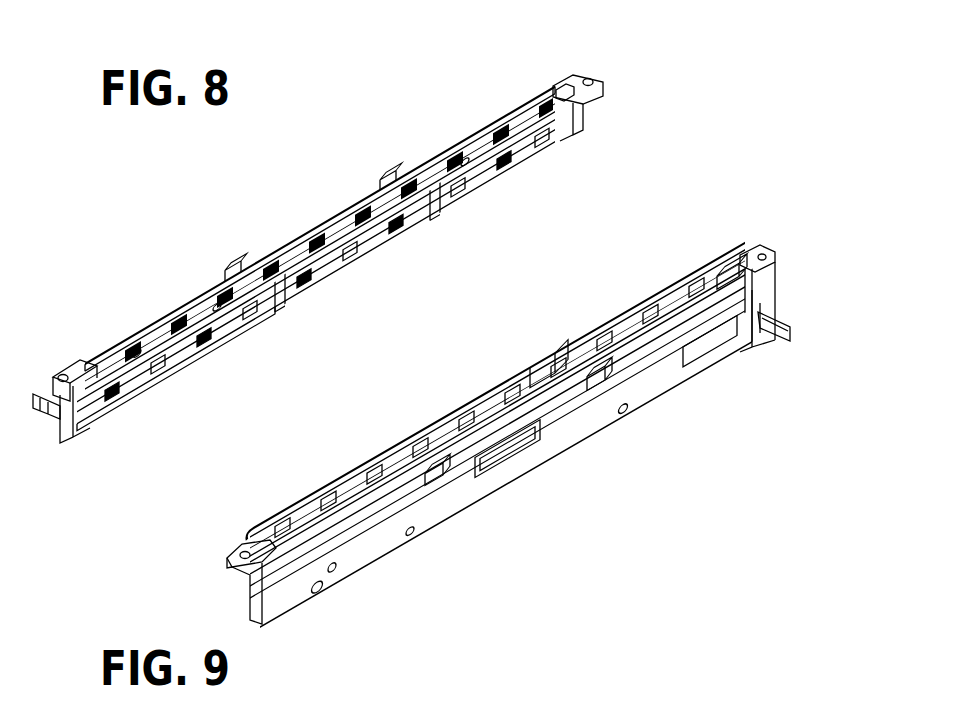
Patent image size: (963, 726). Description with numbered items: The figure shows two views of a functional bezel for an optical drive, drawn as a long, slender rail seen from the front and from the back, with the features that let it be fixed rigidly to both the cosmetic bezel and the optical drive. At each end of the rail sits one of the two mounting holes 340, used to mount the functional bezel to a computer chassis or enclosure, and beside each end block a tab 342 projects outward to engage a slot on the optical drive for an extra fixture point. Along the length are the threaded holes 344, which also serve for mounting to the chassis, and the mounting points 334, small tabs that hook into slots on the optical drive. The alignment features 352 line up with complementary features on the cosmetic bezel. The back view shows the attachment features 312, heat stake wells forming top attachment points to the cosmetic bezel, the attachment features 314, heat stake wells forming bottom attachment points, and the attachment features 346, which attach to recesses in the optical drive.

In FIG. 8, the attachment features 312 is at (193, 302).
In FIG. 9, the attachment features 312 is at (550, 358).
In FIG. 8, the attachment features 314 is at (568, 155).
In FIG. 8, the mounting points 334 is at (385, 177).
In FIG. 9, the mounting points 334 is at (600, 380).
In FIG. 8, the mounting holes 340 is at (578, 72).
In FIG. 9, the mounting holes 340 is at (237, 550).
In FIG. 8, the tab 342 is at (33, 406).
In FIG. 9, the tab 342 is at (788, 347).
In FIG. 8, the threaded holes 344 is at (532, 112).
In FIG. 9, the threaded holes 344 is at (752, 300).
In FIG. 9, the attachment features 346 is at (623, 410).
In FIG. 8, the alignment features 352 is at (465, 163).